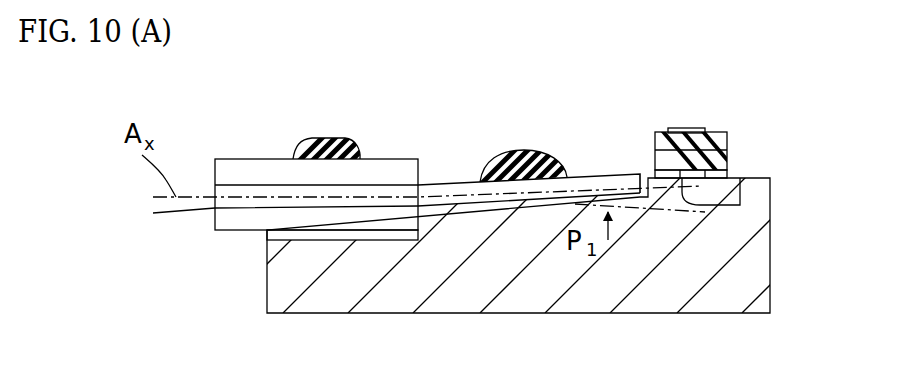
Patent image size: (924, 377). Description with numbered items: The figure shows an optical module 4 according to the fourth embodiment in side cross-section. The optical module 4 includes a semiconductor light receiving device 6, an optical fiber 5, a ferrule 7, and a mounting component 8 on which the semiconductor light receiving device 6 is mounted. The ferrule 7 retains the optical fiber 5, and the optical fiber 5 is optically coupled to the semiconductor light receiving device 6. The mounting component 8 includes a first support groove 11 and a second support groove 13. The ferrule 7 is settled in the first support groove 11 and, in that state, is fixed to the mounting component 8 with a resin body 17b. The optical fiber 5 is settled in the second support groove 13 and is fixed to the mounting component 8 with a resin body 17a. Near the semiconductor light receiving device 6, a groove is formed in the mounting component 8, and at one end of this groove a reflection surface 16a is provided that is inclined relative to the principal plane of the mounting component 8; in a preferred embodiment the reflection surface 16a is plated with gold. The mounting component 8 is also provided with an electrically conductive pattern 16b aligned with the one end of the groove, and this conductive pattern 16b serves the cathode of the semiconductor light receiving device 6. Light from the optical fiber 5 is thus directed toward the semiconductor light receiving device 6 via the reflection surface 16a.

The optical module 4 is at (746, 92).
The optical fiber 5 is at (453, 189).
The semiconductor light receiving device 6 is at (706, 132).
The ferrule 7 is at (262, 159).
The mounting component 8 is at (266, 290).
The first support groove 11 is at (333, 241).
The second support groove 13 is at (453, 207).
The reflection surface 16a is at (745, 205).
The electrically conductive pattern 16b is at (722, 177).
The resin body 17a is at (548, 155).
The resin body 17b is at (330, 148).